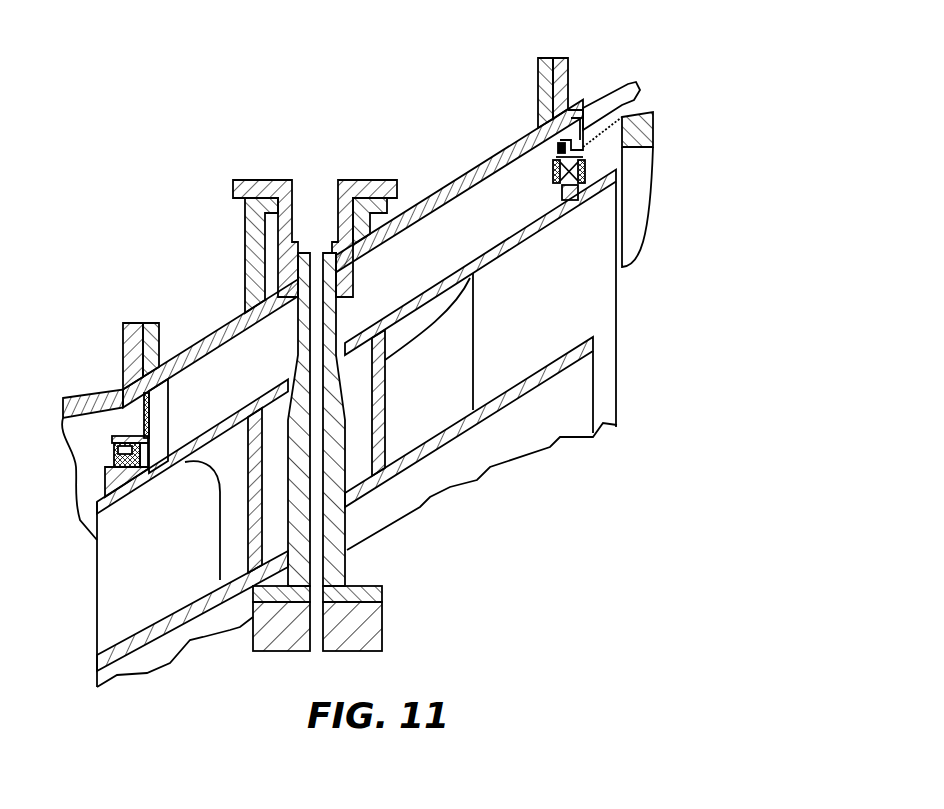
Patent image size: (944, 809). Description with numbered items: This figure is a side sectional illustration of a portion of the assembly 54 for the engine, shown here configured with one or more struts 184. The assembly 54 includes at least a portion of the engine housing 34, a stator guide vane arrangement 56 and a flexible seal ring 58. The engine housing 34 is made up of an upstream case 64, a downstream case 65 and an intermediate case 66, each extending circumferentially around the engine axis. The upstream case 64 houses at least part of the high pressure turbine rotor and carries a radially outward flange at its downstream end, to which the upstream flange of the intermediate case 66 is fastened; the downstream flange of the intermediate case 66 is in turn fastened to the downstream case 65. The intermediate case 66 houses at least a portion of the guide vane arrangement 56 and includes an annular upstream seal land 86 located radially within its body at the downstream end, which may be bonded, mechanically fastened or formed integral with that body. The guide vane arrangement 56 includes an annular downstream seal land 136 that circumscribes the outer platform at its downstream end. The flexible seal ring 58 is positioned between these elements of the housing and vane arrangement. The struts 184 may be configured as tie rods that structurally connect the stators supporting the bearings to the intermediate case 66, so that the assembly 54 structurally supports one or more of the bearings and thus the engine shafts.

The assembly 54 is at (169, 196).
The engine housing 34 is at (459, 164).
The intermediate case 66 is at (430, 197).
The upstream case 64 is at (88, 393).
The stator guide vane arrangement 56 is at (96, 608).
The strut 184 is at (348, 565).
The upstream seal land 86 is at (530, 178).
The downstream case 65 is at (618, 92).
The flexible seal ring 58 is at (581, 156).
The downstream seal land 136 is at (578, 190).